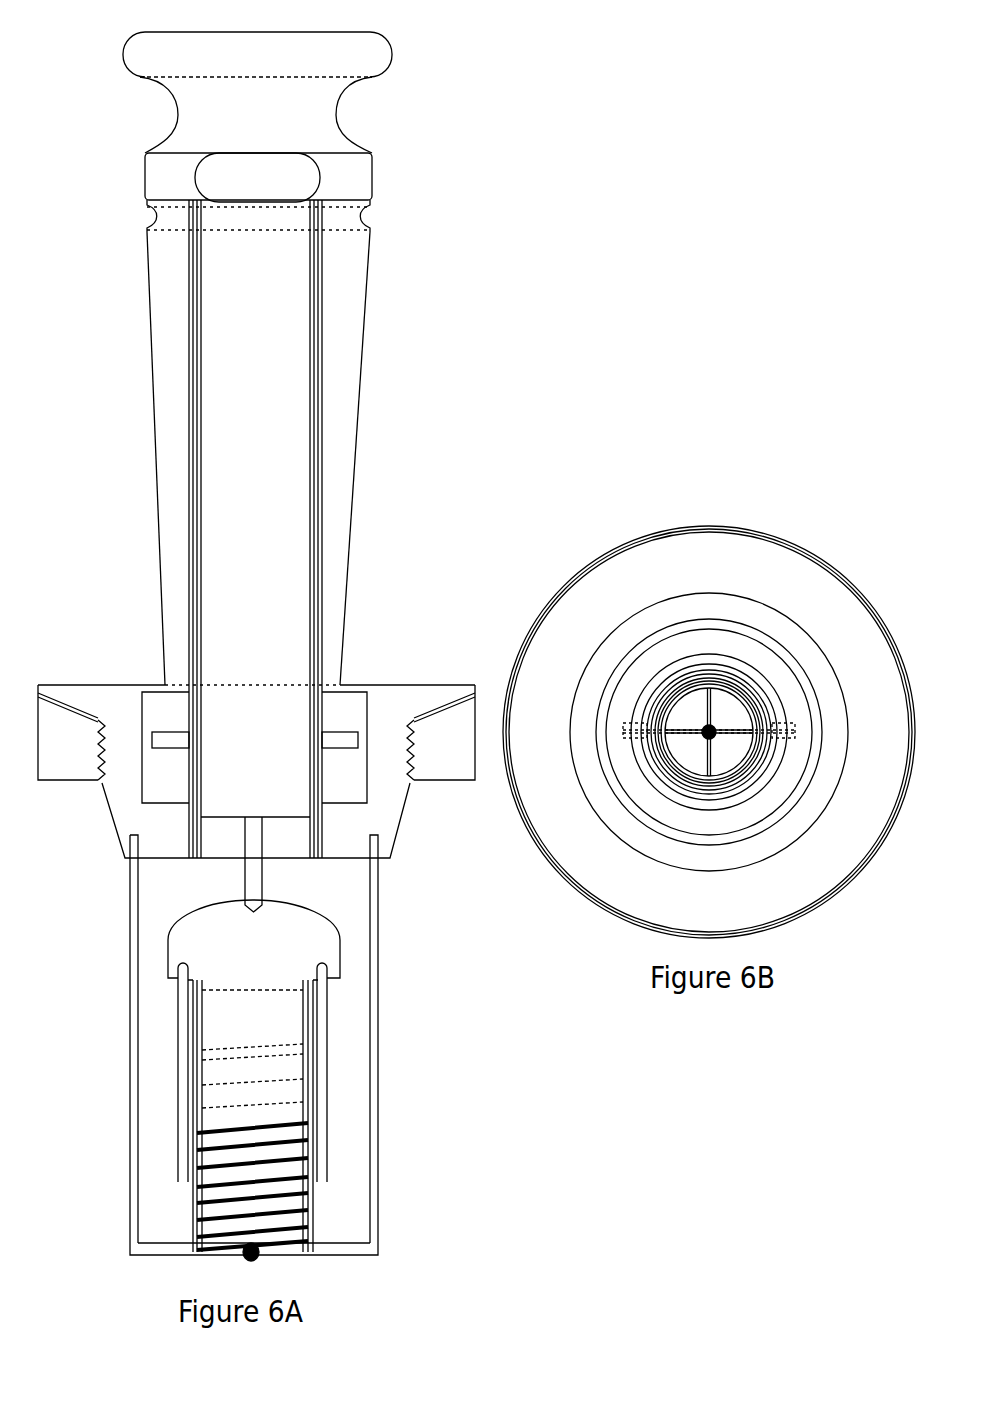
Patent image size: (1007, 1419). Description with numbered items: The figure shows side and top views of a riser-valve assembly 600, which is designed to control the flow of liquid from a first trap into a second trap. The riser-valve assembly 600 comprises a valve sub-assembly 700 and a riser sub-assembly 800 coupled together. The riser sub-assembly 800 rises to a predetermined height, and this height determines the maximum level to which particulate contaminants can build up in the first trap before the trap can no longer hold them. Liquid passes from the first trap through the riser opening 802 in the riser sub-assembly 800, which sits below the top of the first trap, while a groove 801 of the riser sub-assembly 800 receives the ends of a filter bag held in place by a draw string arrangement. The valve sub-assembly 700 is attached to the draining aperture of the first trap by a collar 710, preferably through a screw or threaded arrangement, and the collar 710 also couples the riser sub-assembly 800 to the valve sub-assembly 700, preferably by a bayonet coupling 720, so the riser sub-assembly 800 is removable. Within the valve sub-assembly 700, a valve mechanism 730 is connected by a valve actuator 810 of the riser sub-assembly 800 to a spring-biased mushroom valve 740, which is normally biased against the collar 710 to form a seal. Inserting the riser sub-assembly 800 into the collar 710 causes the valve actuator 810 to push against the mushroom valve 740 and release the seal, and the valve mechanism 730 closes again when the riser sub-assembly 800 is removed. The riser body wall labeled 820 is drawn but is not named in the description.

In FIG. 6A, the riser-valve assembly 600 is at (454, 97).
In FIG. 6A, the riser opening 802 is at (265, 172).
In FIG. 6A, the groove 801 is at (370, 215).
In FIG. 6A, the riser sub-assembly 800 is at (375, 275).
In FIG. 6A, the stem rods 820 is at (172, 283).
In FIG. 6A, the bayonet coupling 720 is at (160, 742).
In FIG. 6B, the bayonet coupling 720 is at (620, 723).
In FIG. 6A, the collar 710 is at (103, 790).
In FIG. 6B, the collar 710 is at (598, 905).
In FIG. 6A, the valve actuator 810 is at (258, 868).
In FIG. 6B, the valve actuator 810 is at (718, 738).
In FIG. 6A, the mushroom valve 740 is at (222, 918).
In FIG. 6A, the valve mechanism 730 is at (178, 1060).
In FIG. 6A, the valve sub-assembly 700 is at (387, 880).